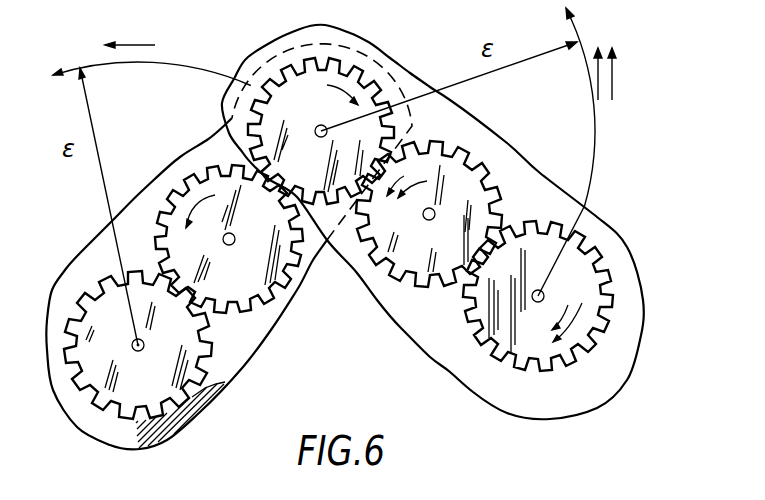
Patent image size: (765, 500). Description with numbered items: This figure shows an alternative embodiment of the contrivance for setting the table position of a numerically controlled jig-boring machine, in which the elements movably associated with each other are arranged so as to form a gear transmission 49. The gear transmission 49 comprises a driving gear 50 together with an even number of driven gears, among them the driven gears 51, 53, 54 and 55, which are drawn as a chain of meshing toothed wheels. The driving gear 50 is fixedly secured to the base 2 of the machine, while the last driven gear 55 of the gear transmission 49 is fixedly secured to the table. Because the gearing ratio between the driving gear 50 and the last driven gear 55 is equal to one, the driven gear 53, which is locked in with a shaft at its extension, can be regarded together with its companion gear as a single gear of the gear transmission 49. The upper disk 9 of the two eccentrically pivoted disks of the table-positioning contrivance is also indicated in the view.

The base 2 is at (180, 435).
The upper disk 9 is at (597, 390).
The gear transmission 49 is at (204, 154).
The driving gear 50 is at (97, 310).
The driven gear 51 is at (247, 288).
The driven gear 53 is at (362, 77).
The driven gear 54 is at (470, 177).
The driven gear 55 is at (583, 263).